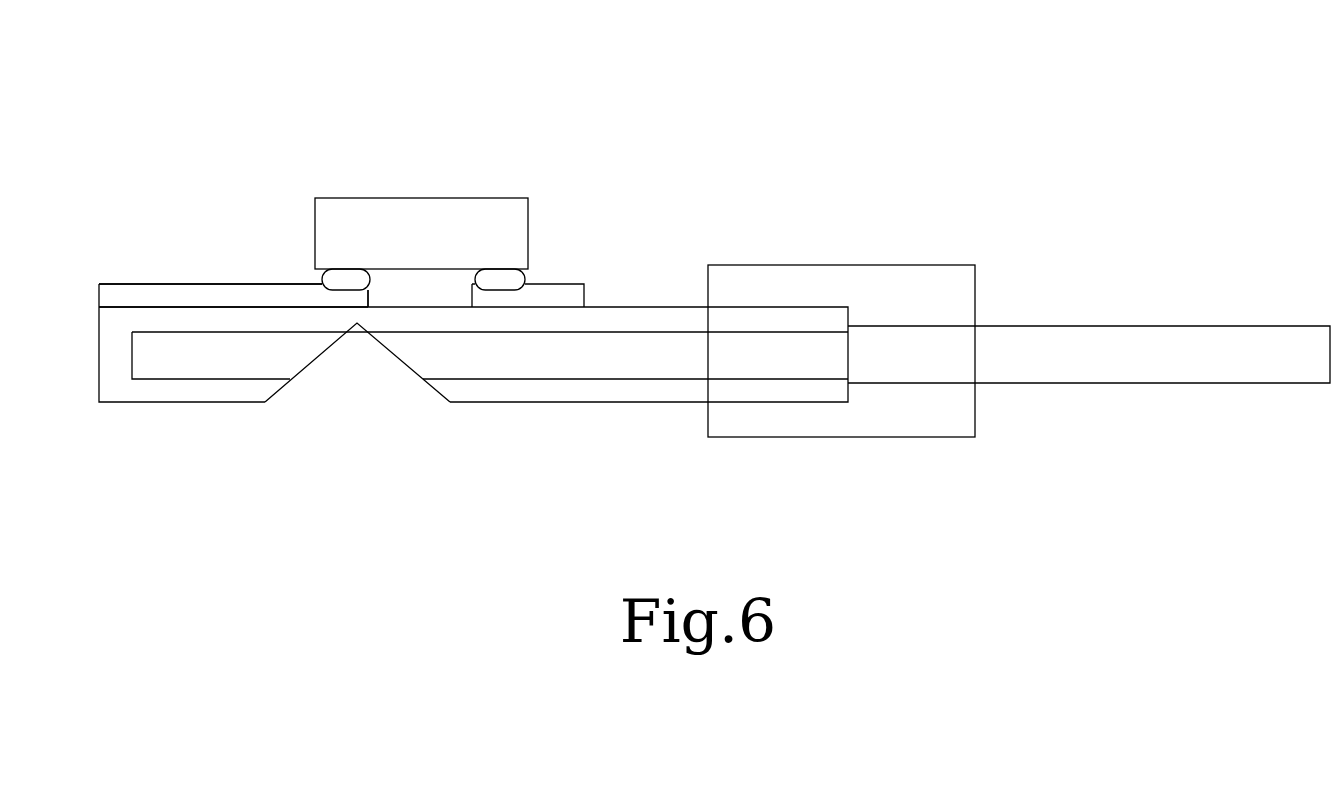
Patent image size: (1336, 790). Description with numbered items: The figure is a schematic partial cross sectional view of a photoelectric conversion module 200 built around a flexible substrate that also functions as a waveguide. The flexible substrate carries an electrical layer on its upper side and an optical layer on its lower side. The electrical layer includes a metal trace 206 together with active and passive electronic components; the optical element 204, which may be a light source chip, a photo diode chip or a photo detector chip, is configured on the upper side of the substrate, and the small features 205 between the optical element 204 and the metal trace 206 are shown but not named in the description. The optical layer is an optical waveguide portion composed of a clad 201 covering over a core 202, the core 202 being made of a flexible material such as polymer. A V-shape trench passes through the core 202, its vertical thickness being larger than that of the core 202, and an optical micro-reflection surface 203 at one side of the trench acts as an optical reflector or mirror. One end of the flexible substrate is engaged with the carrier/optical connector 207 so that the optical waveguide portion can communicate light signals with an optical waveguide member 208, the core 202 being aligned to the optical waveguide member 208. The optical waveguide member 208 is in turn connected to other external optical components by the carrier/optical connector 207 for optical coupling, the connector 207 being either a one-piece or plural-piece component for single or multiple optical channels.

The photoelectric conversion module 200 is at (782, 130).
The clad 201 is at (210, 390).
The core 202 is at (538, 363).
The optical micro-reflection surface 203 is at (393, 364).
The optical element 204 is at (433, 243).
The solder bumps / pads 205 is at (500, 277).
The metal trace 206 is at (233, 295).
The optical connector/carrier 207 is at (917, 287).
The optical waveguide member 208 is at (1150, 365).